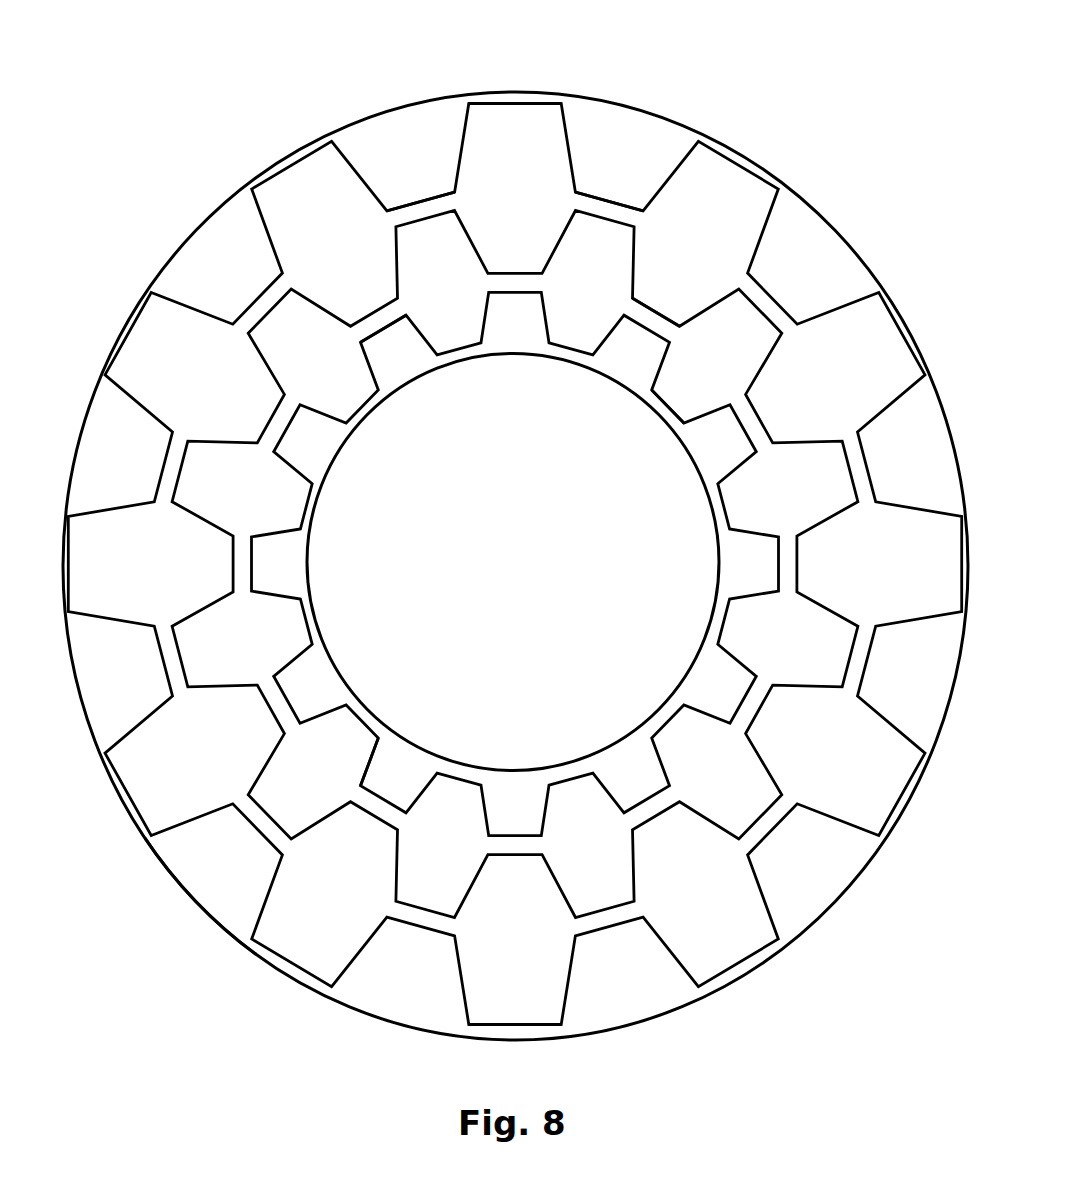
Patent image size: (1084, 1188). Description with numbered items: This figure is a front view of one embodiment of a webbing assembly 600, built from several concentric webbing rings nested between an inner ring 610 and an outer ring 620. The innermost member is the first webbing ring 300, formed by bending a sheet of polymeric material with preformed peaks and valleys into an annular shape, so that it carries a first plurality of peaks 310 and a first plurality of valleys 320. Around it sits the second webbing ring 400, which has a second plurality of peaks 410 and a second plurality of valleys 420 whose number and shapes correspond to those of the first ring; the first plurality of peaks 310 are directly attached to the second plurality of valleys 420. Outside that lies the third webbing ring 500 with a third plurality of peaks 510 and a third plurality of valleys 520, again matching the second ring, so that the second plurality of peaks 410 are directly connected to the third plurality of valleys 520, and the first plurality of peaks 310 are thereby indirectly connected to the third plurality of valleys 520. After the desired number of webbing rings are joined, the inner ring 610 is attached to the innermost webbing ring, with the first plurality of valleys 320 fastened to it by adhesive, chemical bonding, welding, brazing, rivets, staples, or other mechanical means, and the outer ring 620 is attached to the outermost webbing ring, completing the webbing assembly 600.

The first webbing ring 300 is at (717, 670).
The first plurality of peaks 310 is at (380, 327).
The first plurality of valleys 320 is at (672, 398).
The second webbing ring 400 is at (200, 392).
The second plurality of peaks 410 is at (414, 212).
The second plurality of valleys 420 is at (653, 310).
The third webbing ring 500 is at (267, 162).
The third plurality of peaks 510 is at (528, 102).
The third plurality of valleys 520 is at (610, 197).
The webbing assembly 600 is at (150, 125).
The inner ring 610 is at (385, 738).
The outer ring 620 is at (198, 910).